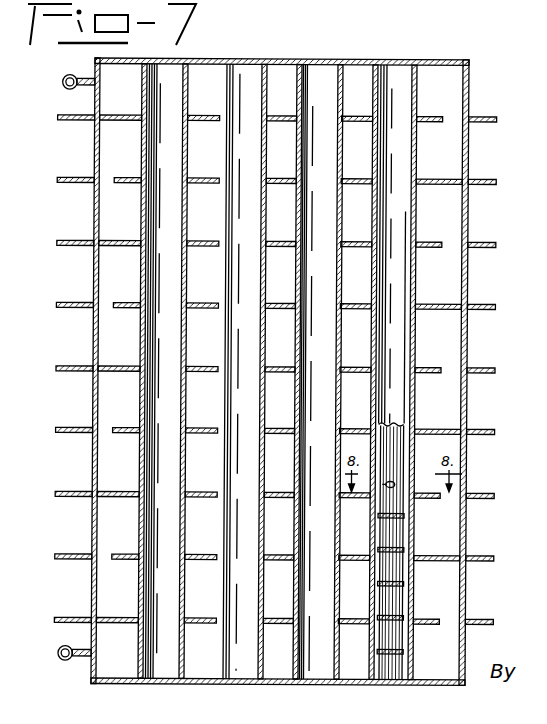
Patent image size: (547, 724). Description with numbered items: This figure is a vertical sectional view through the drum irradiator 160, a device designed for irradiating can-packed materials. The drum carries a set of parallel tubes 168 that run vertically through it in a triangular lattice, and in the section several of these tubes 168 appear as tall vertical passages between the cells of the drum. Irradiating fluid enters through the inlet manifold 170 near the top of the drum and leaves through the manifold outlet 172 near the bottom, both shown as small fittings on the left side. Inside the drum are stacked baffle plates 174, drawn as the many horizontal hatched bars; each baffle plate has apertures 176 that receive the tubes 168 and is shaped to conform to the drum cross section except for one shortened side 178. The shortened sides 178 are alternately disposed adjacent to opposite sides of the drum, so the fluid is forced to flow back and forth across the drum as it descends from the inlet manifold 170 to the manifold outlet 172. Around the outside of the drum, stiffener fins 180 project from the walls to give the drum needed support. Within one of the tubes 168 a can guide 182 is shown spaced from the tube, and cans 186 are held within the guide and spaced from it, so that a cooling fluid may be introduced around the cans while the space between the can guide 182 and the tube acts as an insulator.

The drum irradiator 160 is at (470, 417).
The tubes 168 is at (225, 357).
The inlet manifold 170 is at (68, 90).
The manifold outlet 172 is at (63, 660).
The baffle plates 174 is at (128, 175).
The apertures 176 is at (147, 309).
The shortened side 178 is at (277, 355).
The stiffener fins 180 is at (476, 178).
The can guides 182 is at (456, 551).
The cans 186 is at (397, 535).